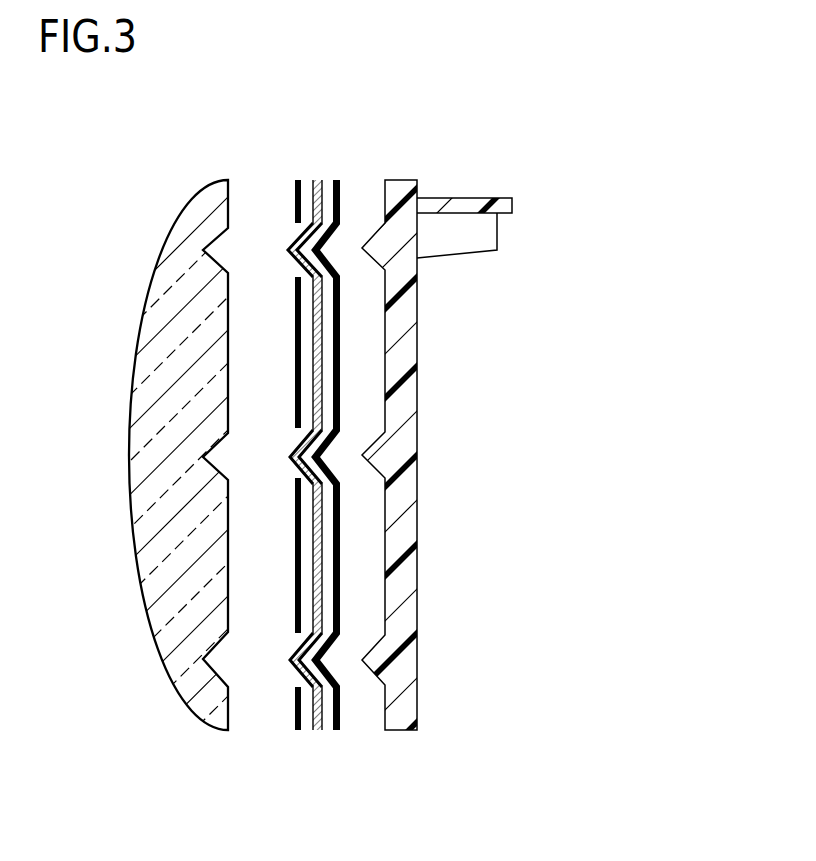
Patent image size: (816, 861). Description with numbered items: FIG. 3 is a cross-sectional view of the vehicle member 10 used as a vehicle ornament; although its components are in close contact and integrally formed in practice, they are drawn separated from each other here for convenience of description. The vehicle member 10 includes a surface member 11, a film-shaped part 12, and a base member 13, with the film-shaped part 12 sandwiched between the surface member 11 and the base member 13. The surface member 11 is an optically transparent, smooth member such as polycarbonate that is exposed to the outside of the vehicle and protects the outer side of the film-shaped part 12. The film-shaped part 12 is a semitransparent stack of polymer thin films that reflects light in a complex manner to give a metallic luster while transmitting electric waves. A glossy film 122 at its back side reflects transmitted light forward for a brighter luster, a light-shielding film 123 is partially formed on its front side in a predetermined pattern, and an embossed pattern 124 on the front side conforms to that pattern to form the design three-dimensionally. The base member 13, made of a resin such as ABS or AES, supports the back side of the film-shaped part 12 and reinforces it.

The vehicle member 10 is at (419, 131).
The surface member 11 is at (200, 718).
The film-shaped part 12 is at (316, 732).
The glossy film 122 is at (341, 703).
The light-shielding film 123 is at (293, 202).
The embossed pattern 124 is at (297, 263).
The base member 13 is at (418, 697).